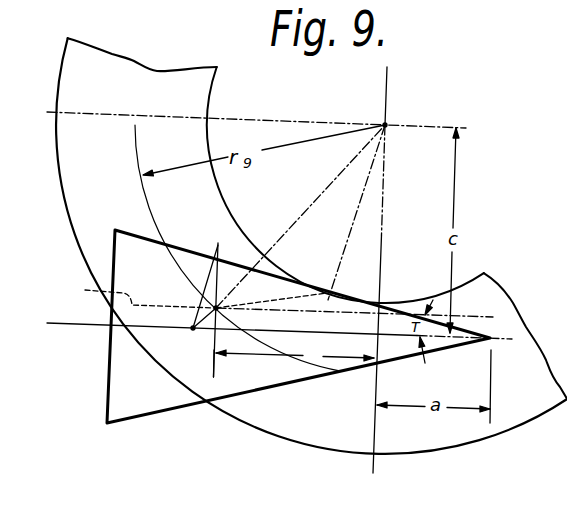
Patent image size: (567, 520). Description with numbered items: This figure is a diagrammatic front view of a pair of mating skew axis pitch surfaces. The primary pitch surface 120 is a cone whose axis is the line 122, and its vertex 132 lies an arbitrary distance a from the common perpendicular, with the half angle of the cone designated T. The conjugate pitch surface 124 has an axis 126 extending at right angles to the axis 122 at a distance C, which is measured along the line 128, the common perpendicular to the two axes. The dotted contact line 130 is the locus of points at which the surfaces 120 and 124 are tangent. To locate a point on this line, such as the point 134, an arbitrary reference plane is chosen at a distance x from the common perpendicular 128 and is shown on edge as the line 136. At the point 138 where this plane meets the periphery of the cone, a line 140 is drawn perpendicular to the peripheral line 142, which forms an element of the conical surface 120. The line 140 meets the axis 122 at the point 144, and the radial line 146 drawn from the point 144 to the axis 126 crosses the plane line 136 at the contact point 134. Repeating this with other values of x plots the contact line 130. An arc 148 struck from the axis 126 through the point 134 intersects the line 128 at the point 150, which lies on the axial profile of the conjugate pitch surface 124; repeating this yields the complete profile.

The primary pitch surface 120 is at (270, 378).
The axis of the primary pitch surface 122 is at (83, 325).
The conjugate pitch surface 124 is at (513, 413).
The axis of the conjugate pitch surface 126 is at (386, 126).
The common perpendicular 128 is at (385, 193).
The contact line 130 is at (130, 292).
The vertex of the cone 132 is at (516, 310).
The contact point 134 is at (222, 307).
The reference plane line 136 is at (214, 350).
The intersection point on cone periphery 138 is at (218, 250).
The perpendicular line 140 is at (212, 278).
The peripheral line 142 is at (262, 262).
The intersection point on cone axis 144 is at (193, 328).
The radial line 146 is at (295, 222).
The arc 148 is at (320, 372).
The profile point 150 is at (363, 370).